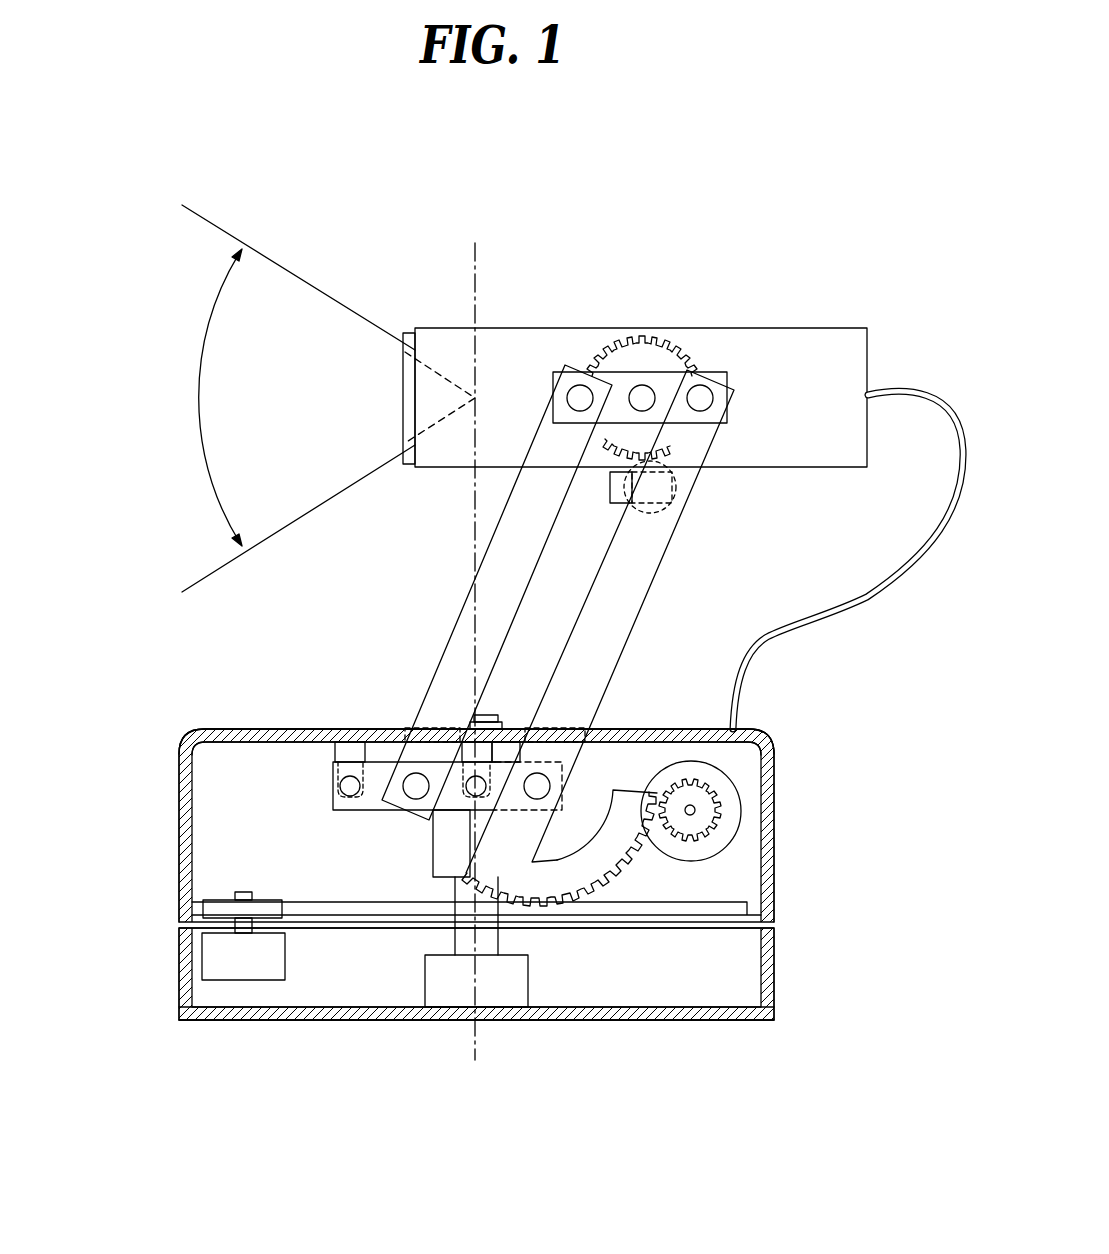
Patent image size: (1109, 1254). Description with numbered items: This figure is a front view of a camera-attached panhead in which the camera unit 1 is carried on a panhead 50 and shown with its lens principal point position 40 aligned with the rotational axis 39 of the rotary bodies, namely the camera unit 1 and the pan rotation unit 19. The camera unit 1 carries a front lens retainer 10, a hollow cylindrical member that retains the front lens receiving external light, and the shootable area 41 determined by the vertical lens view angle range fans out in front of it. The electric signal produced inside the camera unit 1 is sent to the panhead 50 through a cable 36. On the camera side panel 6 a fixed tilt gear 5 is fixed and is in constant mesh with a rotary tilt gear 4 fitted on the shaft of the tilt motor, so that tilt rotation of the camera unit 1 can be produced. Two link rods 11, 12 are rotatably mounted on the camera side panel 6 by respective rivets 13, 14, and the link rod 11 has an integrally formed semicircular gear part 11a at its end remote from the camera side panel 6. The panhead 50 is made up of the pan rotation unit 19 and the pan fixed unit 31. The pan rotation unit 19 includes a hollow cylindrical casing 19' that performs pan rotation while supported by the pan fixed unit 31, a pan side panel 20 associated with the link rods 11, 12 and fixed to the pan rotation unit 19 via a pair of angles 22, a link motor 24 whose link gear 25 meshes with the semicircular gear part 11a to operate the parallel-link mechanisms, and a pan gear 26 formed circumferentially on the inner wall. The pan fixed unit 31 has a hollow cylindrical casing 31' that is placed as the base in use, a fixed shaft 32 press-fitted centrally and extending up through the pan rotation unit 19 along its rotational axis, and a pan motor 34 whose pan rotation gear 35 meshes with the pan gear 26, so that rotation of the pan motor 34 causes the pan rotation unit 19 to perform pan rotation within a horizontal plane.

The camera unit 1 is at (836, 328).
The rotary tilt gear 4 is at (620, 505).
The fixed tilt gear 5 is at (700, 372).
The camera side panel 6 is at (623, 372).
The front lens retainer 10 is at (410, 333).
The link rod 11 is at (670, 536).
The semicircular gear part 11a is at (625, 795).
The link rod 12 is at (460, 617).
The rivet 13 is at (700, 372).
The rivet 14 is at (572, 385).
The pan rotation unit 19 is at (524, 827).
The hollow cylindrical casing 19' is at (523, 719).
The pan side panel 20 is at (333, 773).
The angles 22 is at (473, 750).
The link motor 24 is at (730, 847).
The link gear 25 is at (712, 782).
The pan gear 26 is at (648, 905).
The pan fixed unit 31 is at (524, 974).
The hollow cylindrical casing 31' is at (521, 1030).
The fixed shaft 32 is at (485, 943).
The pan motor 34 is at (250, 968).
The pan rotation gear 35 is at (218, 908).
The cable 36 is at (871, 611).
The rotational axis 39 is at (475, 262).
The lens principal point position 40 is at (478, 398).
The shootable area 41 is at (305, 402).
The panhead 50 is at (876, 895).